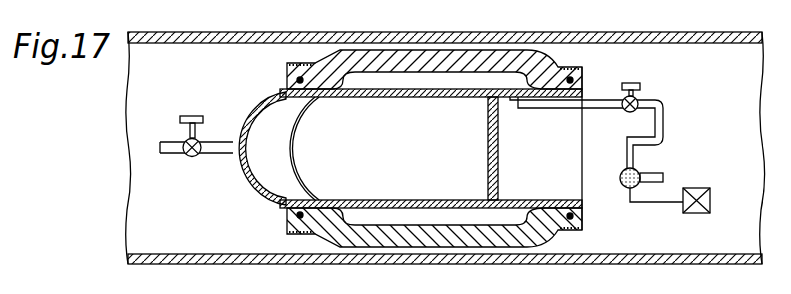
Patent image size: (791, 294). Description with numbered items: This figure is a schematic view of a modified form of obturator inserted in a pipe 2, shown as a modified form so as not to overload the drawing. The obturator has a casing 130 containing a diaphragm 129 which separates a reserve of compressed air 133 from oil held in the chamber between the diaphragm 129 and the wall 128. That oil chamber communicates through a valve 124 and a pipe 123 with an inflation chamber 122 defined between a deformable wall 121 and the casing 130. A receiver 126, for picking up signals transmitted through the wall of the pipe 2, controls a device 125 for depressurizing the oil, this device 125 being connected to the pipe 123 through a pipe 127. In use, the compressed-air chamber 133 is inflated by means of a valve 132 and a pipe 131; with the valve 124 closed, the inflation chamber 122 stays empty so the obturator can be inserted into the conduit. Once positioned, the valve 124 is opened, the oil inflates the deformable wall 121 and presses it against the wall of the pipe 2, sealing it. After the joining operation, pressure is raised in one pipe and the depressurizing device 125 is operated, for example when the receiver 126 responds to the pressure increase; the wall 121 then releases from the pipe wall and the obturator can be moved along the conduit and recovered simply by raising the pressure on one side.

The pipe 2 is at (150, 263).
The deformable wall 121 is at (473, 63).
The chamber 122 is at (380, 80).
The pipe 123 is at (607, 100).
The valve 124 is at (638, 100).
The depressurizing device 125 is at (622, 193).
The receiver 126 is at (705, 213).
The pipe 127 is at (620, 163).
The wall 128 is at (498, 178).
The diaphragm 129 is at (302, 170).
The casing 130 is at (267, 177).
The pipe 131 is at (213, 152).
The valve 132 is at (180, 119).
The reserve of compressed air 133 is at (262, 183).